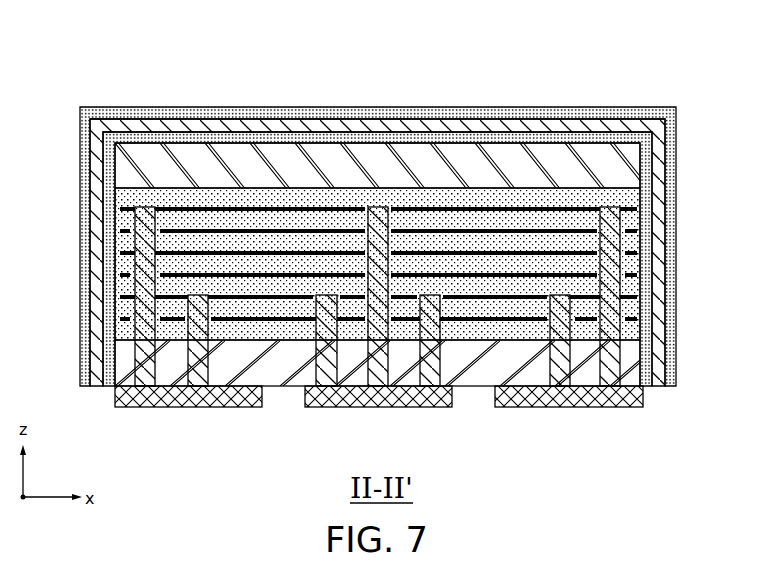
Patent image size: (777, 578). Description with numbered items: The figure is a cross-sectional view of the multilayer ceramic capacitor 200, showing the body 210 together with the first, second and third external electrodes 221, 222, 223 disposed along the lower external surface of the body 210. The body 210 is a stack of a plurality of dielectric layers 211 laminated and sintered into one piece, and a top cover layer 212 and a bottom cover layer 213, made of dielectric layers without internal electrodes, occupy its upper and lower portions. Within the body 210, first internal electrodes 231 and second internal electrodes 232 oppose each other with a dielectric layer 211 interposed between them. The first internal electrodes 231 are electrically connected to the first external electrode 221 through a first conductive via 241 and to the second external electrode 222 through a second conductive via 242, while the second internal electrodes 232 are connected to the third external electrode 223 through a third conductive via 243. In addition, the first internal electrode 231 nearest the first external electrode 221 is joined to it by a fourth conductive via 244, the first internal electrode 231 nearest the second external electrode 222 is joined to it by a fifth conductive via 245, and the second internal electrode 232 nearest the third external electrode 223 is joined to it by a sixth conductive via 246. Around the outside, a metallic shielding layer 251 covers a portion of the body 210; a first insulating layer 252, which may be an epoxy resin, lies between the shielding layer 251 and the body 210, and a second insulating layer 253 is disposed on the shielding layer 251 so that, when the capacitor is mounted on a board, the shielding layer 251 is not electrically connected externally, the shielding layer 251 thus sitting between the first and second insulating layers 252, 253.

The multilayer ceramic capacitor 200 is at (218, 28).
The body 210 is at (378, 225).
The dielectric layer 211 is at (630, 220).
The top cover layer 212 is at (630, 162).
The bottom cover layer 213 is at (625, 362).
The first external electrode 221 is at (133, 407).
The second external electrode 222 is at (593, 402).
The third external electrode 223 is at (395, 402).
The first internal electrode 231 is at (238, 205).
The second internal electrode 232 is at (288, 229).
The first conductive via 241 is at (142, 262).
The second conductive via 242 is at (612, 261).
The third conductive via 243 is at (377, 388).
The fourth conductive via 244 is at (200, 387).
The fifth conductive via 245 is at (560, 380).
The sixth conductive via 246 is at (318, 390).
The shielding layer 251 is at (600, 125).
The first insulating layer 252 is at (582, 138).
The second insulating layer 253 is at (637, 112).